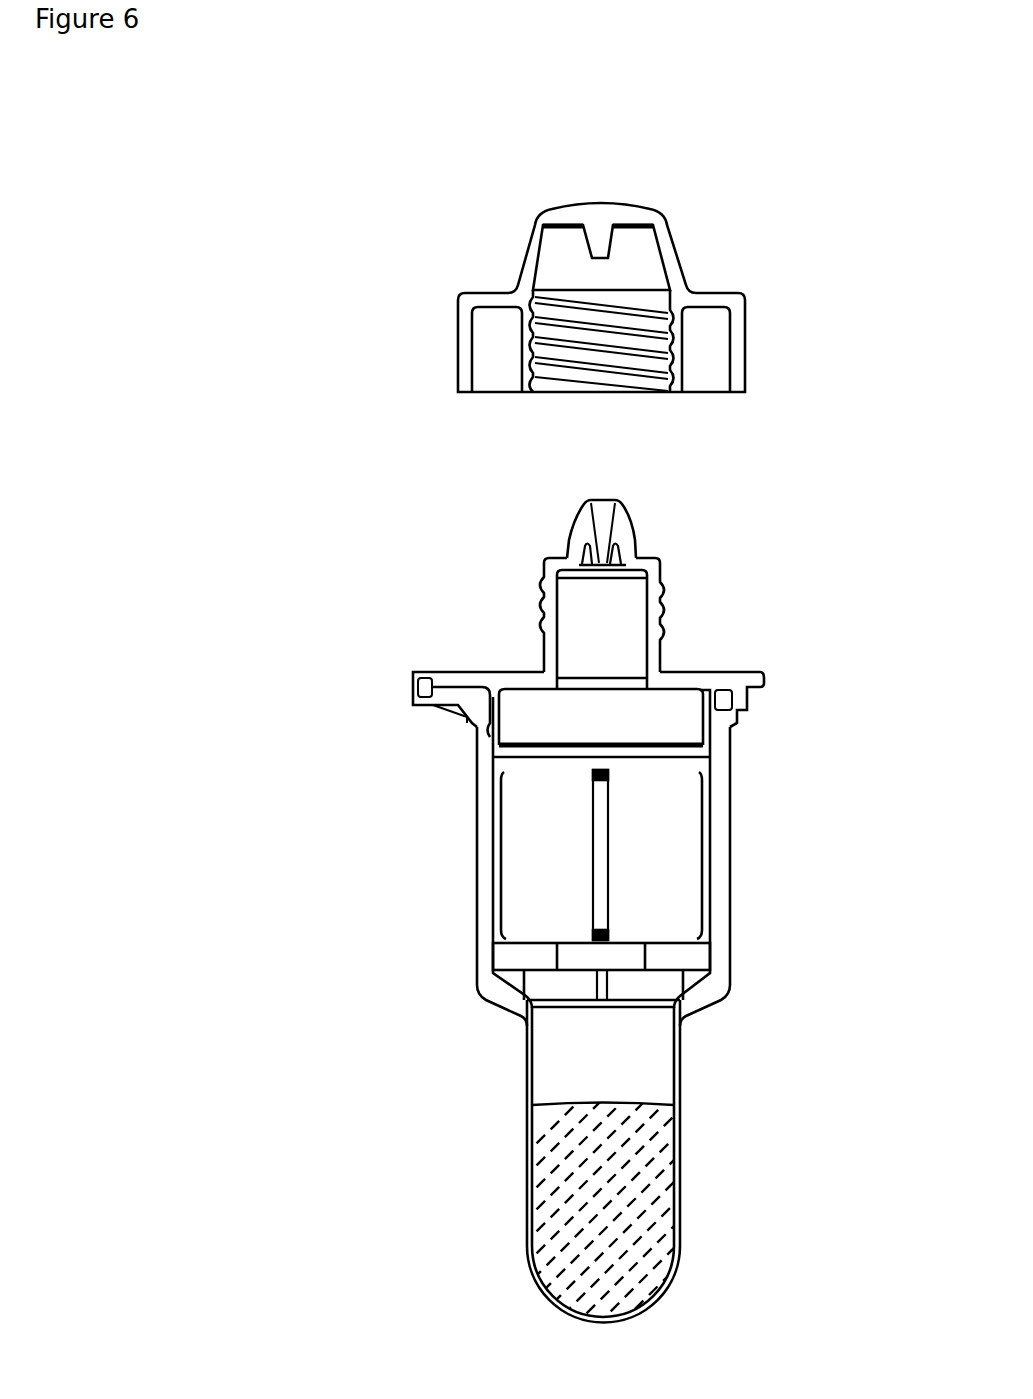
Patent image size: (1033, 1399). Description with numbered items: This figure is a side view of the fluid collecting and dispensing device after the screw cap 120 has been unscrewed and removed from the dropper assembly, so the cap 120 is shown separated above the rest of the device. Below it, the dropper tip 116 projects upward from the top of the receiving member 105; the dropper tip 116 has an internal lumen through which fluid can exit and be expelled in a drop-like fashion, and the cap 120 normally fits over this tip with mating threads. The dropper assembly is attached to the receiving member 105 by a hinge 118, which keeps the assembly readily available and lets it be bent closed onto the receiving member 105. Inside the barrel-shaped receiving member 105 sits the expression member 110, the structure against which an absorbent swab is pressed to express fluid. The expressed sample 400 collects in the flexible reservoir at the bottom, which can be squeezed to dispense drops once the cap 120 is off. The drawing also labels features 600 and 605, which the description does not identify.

The screw cap 120 is at (673, 245).
The screw plug of cap 600 is at (600, 237).
The dispensing tip 605 is at (603, 515).
The dropper tip 116 is at (617, 580).
The hinge 118 is at (413, 678).
The receiving member 105 is at (717, 843).
The expression member 110 is at (518, 953).
The sample 400 is at (642, 1203).